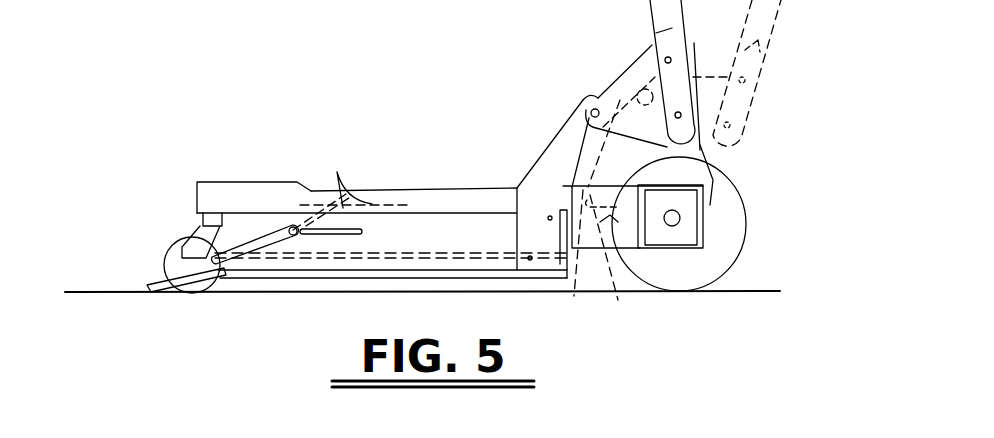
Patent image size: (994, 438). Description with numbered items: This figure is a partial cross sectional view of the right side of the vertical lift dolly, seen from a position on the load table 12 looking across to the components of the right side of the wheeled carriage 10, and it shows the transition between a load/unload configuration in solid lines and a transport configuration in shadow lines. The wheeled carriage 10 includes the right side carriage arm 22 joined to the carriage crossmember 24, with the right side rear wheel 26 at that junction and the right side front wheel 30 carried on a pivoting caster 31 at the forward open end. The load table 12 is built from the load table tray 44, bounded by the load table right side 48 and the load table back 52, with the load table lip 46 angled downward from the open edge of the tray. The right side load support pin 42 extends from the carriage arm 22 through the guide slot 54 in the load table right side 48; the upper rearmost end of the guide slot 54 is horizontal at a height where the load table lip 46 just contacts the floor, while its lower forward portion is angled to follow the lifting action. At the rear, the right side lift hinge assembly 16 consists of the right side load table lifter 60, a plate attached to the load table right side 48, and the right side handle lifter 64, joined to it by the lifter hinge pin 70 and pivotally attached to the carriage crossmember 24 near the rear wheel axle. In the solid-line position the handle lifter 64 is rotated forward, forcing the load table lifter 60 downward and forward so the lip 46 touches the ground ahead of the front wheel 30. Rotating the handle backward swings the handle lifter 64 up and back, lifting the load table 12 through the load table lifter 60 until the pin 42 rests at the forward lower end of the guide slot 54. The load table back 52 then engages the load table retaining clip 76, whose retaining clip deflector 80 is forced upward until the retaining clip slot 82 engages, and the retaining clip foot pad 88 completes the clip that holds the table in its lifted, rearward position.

The wheeled carriage 10 is at (250, 180).
The load table 12 is at (300, 281).
The right side lift hinge assembly 16 is at (548, 135).
The right side carriage arm 22 is at (384, 207).
The carriage crossmember 24 is at (703, 230).
The right side rear wheel 26 is at (728, 262).
The right side front wheel 30 is at (172, 262).
The pivoting caster 31 is at (203, 228).
The right side load support pin 42 is at (292, 227).
The load table tray 44 is at (480, 256).
The load table lip 46 is at (170, 282).
The load table right side 48 is at (409, 244).
The load table back 52 is at (545, 278).
The guide slot 54 is at (346, 176).
The right side load table lifter 60 is at (555, 160).
The right side handle lifter 64 is at (625, 80).
The lifter hinge pin 70 is at (590, 108).
The load table retaining clip 76 is at (720, 187).
The retaining clip deflector 80 is at (592, 215).
The retaining clip slot 82 is at (612, 262).
The retaining clip foot pad 88 is at (717, 150).